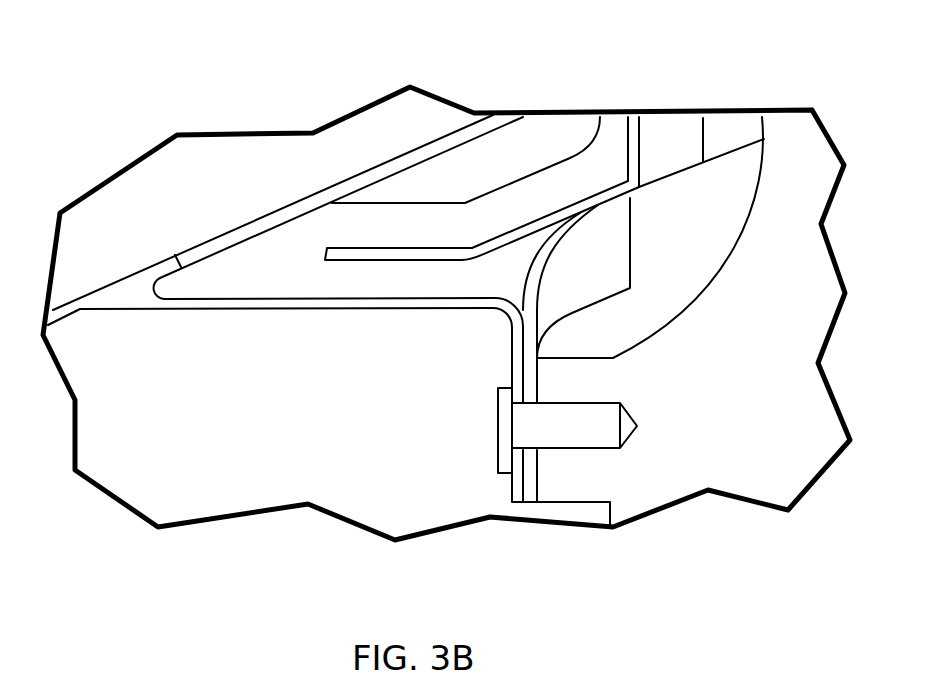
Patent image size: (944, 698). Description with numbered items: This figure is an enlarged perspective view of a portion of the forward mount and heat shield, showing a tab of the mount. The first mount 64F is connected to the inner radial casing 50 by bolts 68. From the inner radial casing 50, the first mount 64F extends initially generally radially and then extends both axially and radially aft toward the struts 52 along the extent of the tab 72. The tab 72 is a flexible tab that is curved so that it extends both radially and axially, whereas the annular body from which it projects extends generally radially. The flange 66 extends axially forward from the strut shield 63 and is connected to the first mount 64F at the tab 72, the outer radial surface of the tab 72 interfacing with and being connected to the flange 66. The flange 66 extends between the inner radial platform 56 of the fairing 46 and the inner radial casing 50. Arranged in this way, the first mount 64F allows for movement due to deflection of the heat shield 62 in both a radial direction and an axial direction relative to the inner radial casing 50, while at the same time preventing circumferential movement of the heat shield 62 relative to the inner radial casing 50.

The fairing 46 is at (203, 227).
The inner radial casing 50 is at (745, 470).
The struts 52 is at (797, 232).
The inner radial platform 56 is at (192, 254).
The heat shield 62 is at (604, 106).
The strut shield 63 is at (636, 122).
The first mount 64F is at (608, 315).
The flange 66 is at (410, 253).
The bolts 68 is at (502, 458).
The tab 72 is at (614, 246).